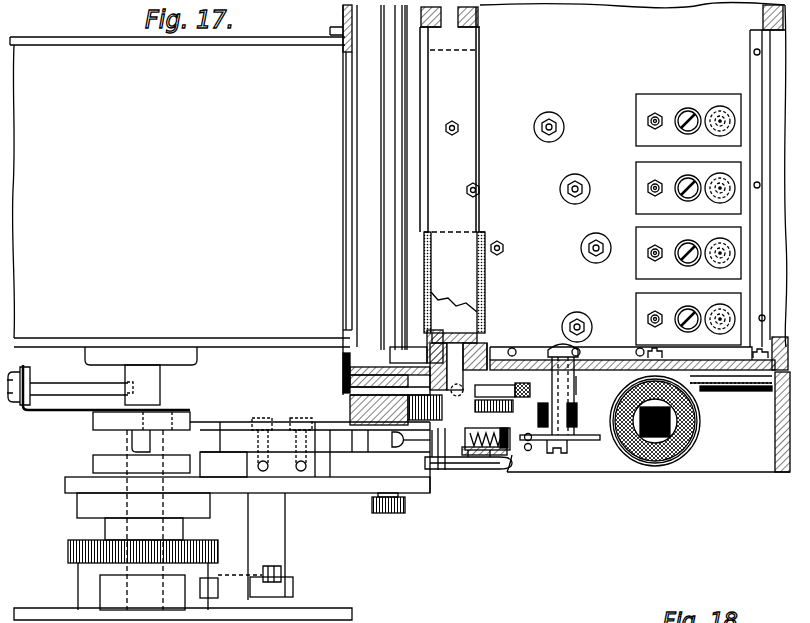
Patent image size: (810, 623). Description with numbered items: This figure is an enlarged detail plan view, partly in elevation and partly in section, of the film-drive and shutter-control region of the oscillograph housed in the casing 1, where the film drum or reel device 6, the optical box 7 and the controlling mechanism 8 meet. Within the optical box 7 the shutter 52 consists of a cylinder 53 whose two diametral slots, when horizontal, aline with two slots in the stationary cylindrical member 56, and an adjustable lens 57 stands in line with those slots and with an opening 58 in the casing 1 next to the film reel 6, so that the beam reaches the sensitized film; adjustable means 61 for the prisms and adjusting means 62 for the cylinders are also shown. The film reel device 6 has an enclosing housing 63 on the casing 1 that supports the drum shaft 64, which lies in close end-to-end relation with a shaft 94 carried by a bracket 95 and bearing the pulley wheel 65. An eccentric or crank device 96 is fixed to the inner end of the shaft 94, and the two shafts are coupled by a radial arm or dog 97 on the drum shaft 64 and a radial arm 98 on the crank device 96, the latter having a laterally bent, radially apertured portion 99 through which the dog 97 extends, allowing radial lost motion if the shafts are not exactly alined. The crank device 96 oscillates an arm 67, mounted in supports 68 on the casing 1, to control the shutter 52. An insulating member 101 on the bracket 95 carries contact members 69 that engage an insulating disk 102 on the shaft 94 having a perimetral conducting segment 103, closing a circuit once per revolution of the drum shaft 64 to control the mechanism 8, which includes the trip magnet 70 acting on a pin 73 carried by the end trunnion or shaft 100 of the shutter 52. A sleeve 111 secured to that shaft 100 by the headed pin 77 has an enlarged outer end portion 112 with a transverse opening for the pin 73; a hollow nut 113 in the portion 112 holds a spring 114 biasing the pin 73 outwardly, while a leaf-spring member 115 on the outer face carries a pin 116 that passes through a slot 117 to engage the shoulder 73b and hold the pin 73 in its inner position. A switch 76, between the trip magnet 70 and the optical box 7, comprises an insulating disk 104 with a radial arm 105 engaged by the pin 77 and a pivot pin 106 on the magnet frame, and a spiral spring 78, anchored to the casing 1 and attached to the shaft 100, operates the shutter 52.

The casing 1 is at (345, 4).
The film drum or reel device 6 is at (275, 337).
The optical box 7 is at (635, 238).
The controlling mechanism 8 is at (567, 503).
The shutter 52 is at (513, 166).
The cylinder 53 is at (470, 272).
The stationary cylindrical member 56 is at (486, 284).
The adjustable lens 57 is at (400, 118).
The opening 58 is at (352, 236).
The adjustable means 61 is at (582, 242).
The adjusting means 62 is at (716, 100).
The enclosing housing 63 is at (47, 47).
The drum shaft 64 is at (155, 398).
The pulley wheel 65 is at (350, 621).
The arm 67 is at (356, 452).
The supports 68 is at (315, 476).
The contact members 69 is at (212, 585).
The trip magnet 70 is at (700, 433).
The pin 73 is at (392, 440).
The shoulder 73b is at (430, 440).
The switch 76 is at (572, 397).
The headed pin 77 is at (487, 353).
The spiral spring 78 is at (505, 405).
The shaft 94 is at (93, 462).
The bracket 95 is at (345, 488).
The crank device 96 is at (190, 418).
The radial arm or dog 97 is at (52, 393).
The radial arm 98 is at (53, 410).
The laterally bent portion 99 is at (24, 366).
The end trunnion or shaft 100 is at (485, 338).
The insulating member 101 is at (284, 553).
The insulating disk or drum 102 is at (207, 570).
The perimetral conducting segment 103 is at (100, 588).
The insulating disk 104 is at (578, 378).
The radial arm 105 is at (503, 387).
The pivot pin or shaft 106 is at (566, 449).
The sleeve 111 is at (456, 473).
The enlarged outer end portion 112 is at (463, 473).
The hollow nut or adjusting member 113 is at (500, 472).
The spring 114 is at (492, 473).
The leaf-spring member 115 is at (428, 494).
The pin 116 is at (389, 495).
The slot 117 is at (468, 473).